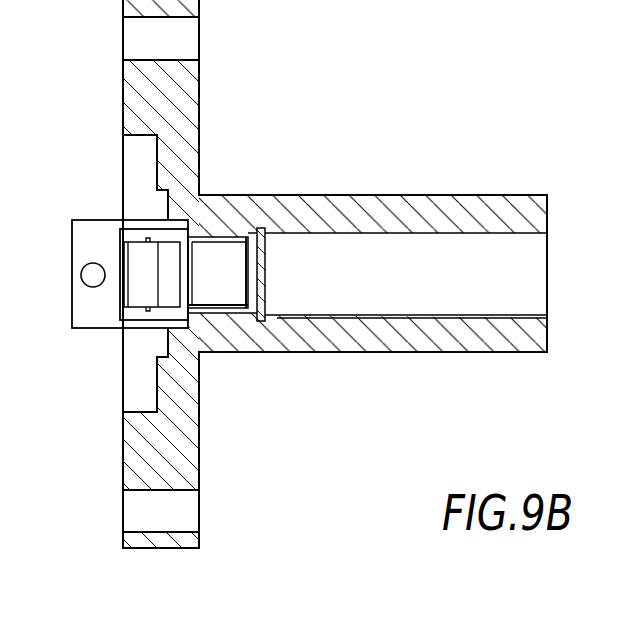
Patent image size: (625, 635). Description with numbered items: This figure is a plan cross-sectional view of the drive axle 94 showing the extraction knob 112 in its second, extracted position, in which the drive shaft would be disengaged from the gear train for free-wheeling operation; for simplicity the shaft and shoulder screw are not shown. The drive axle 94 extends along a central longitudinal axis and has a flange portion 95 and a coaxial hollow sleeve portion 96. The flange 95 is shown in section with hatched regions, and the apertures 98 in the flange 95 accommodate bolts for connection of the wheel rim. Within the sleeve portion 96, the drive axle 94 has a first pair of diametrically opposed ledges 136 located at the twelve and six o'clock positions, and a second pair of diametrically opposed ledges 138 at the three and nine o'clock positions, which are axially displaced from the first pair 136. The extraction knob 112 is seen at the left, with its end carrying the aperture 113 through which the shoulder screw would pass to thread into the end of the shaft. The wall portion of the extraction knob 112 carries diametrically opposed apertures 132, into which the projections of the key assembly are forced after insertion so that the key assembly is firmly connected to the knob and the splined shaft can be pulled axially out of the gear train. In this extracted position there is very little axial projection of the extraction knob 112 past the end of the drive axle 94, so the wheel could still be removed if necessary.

The drive axle 94 is at (340, 418).
The flange portion 95 is at (188, 100).
The sleeve portion 96 is at (477, 205).
The apertures 98 is at (127, 17).
The extraction knob 112 is at (95, 227).
The aperture 113 is at (184, 285).
The apertures 132 is at (93, 278).
The first pair of diametrically opposed ledges 136 is at (248, 246).
The second pair of diametrically opposed ledges 138 is at (193, 230).